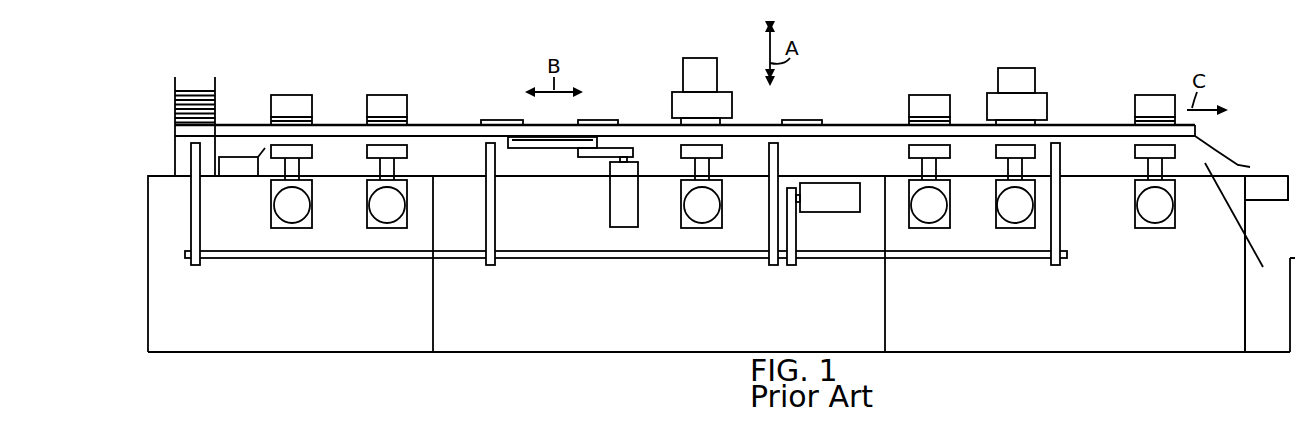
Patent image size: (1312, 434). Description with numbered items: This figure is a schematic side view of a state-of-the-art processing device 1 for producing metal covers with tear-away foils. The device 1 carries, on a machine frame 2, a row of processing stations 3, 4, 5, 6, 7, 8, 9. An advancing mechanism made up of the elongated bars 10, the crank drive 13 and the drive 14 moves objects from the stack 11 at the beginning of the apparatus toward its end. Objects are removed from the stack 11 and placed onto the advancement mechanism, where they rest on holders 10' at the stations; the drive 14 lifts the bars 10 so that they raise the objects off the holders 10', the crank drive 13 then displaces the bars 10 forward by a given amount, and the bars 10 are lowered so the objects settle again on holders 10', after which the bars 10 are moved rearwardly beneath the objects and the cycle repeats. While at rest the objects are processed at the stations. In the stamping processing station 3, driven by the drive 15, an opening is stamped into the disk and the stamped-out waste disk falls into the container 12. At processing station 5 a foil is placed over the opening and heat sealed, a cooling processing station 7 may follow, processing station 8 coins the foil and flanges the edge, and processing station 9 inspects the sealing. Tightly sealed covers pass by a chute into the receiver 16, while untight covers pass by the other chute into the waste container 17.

The processing device 1 is at (490, 364).
The machine frame 2 is at (378, 340).
The stamping processing station 3 is at (291, 100).
The processing station 4 is at (384, 100).
The processing station 5 is at (722, 100).
The processing station 6 is at (700, 67).
The cooling processing station 7 is at (928, 103).
The processing station 8 is at (997, 100).
The processing station 9 is at (1143, 103).
The elongated bars 10 is at (685, 108).
The holders 10' is at (665, 101).
The stack 11 is at (192, 90).
The container 12 is at (245, 165).
The crank drive 13 is at (622, 202).
The drive 14 is at (817, 200).
The drive 15 is at (382, 212).
The receiver 16 is at (1271, 182).
The waste container 17 is at (1262, 325).